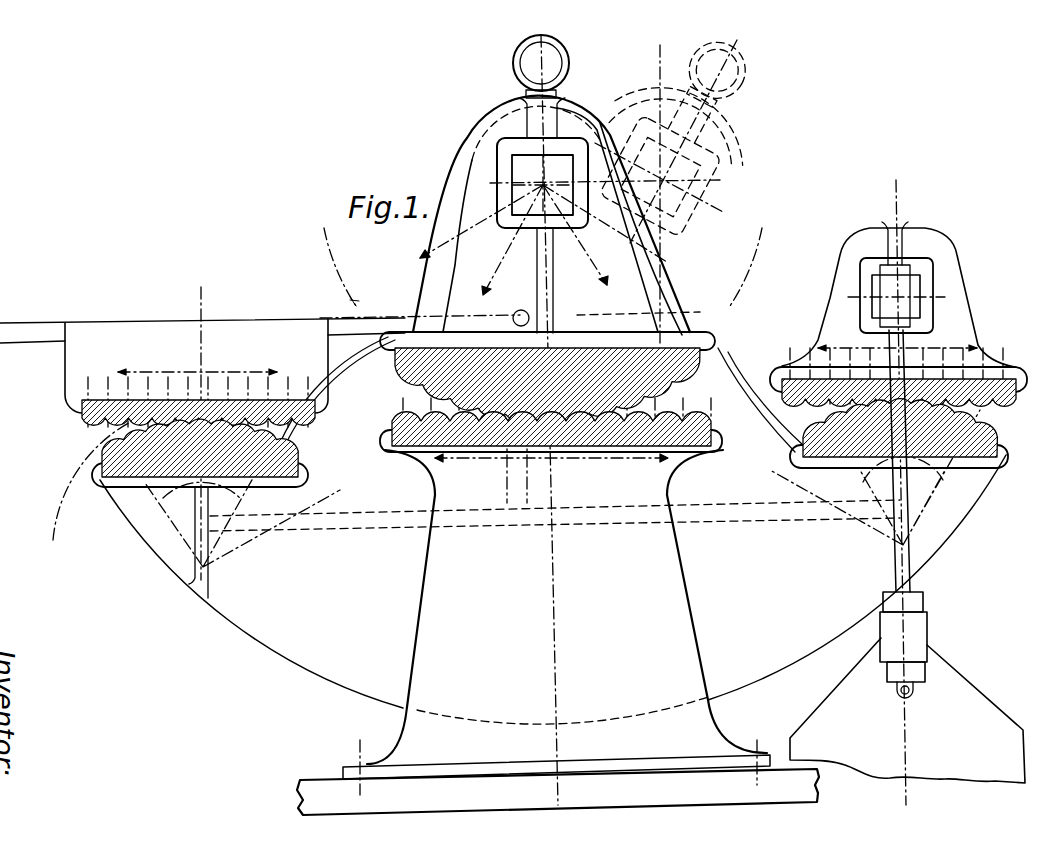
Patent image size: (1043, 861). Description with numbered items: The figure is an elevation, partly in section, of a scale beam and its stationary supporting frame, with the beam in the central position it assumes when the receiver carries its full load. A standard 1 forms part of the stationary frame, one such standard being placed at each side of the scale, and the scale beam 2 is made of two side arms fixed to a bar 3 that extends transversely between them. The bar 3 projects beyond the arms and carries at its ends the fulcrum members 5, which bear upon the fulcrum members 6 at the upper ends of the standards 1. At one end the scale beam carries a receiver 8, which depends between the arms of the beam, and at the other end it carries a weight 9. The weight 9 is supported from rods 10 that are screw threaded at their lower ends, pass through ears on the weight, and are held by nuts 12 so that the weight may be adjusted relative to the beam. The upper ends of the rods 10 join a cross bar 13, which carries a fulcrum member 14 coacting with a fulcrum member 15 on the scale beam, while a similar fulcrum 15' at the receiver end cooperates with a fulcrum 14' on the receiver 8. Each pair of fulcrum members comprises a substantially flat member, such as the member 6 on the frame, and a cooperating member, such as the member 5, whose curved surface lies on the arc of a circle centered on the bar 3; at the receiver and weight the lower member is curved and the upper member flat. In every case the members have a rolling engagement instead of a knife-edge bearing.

The standard 1 is at (558, 632).
The scale beam 2 is at (553, 589).
The bar 3 is at (542, 131).
The fulcrum member 5 is at (547, 259).
The fulcrum member 6 is at (490, 430).
The receiver 8 is at (179, 389).
The weight 9 is at (907, 710).
The rod 10 is at (900, 569).
The nut 12 is at (927, 600).
The cross bar 13 is at (873, 283).
The fulcrum member 14 is at (893, 371).
The fulcrum 14' is at (198, 383).
The fulcrum member 15 is at (899, 447).
The fulcrum 15' is at (191, 508).